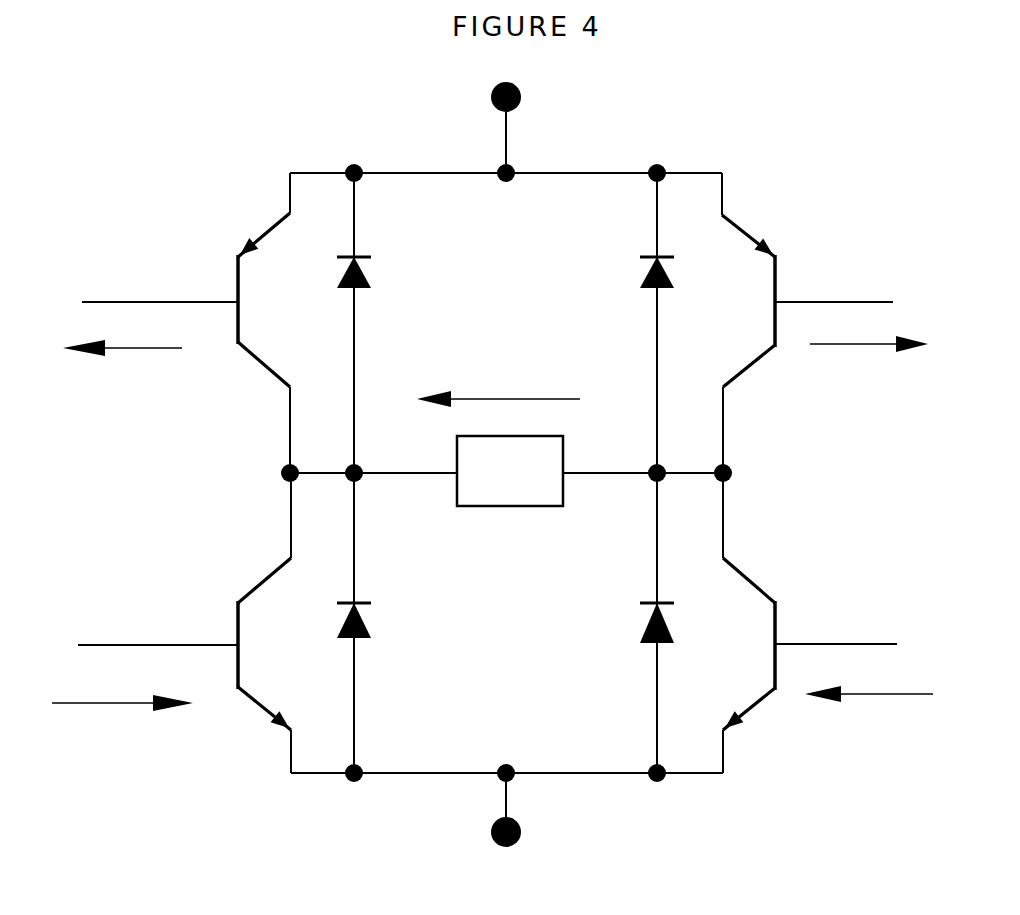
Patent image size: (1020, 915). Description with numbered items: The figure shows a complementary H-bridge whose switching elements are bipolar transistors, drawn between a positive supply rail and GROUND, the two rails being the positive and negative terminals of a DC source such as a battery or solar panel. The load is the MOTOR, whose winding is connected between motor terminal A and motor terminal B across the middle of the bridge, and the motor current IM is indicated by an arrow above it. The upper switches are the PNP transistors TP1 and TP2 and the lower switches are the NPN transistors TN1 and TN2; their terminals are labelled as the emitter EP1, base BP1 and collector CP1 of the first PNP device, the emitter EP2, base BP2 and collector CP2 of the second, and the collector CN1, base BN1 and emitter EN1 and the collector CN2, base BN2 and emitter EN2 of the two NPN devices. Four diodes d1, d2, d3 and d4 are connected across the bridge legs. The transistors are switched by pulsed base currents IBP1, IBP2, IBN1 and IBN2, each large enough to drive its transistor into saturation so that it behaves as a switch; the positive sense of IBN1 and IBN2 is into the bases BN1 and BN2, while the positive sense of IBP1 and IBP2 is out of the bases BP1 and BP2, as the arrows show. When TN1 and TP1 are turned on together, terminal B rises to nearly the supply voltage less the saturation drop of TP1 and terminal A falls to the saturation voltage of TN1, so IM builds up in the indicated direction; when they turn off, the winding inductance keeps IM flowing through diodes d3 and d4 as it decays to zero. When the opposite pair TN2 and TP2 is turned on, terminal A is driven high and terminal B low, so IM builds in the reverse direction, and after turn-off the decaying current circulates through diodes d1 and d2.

The ground terminal GROUND is at (512, 826).
The motor MOTOR is at (510, 471).
The motor terminal A is at (443, 460).
The motor terminal B is at (579, 460).
The motor current IM is at (498, 391).
The diode d1 is at (368, 630).
The diode d2 is at (638, 272).
The diode d3 is at (638, 623).
The diode d4 is at (372, 275).
The PNP transistor TP1 is at (744, 323).
The PNP transistor TP2 is at (265, 323).
The NPN transistor TN1 is at (266, 623).
The NPN transistor TN2 is at (744, 623).
The emitter of TP1 EP1 is at (780, 240).
The emitter of TP2 EP2 is at (235, 240).
The base of TP1 BP1 is at (787, 283).
The base of TP2 BP2 is at (225, 288).
The collector of TP1 CP1 is at (737, 397).
The collector of TP2 CP2 is at (267, 388).
The collector of TN1 CN1 is at (273, 550).
The collector of TN2 CN2 is at (737, 559).
The base of TN1 BN1 is at (222, 632).
The base of TN2 BN2 is at (793, 625).
The emitter of TN1 EN1 is at (272, 738).
The emitter of TN2 EN2 is at (737, 738).
The base current of TP1 IBP1 is at (869, 333).
The base current of TP2 IBP2 is at (122, 337).
The base current of TN1 IBN1 is at (122, 694).
The base current of TN2 IBN2 is at (869, 684).